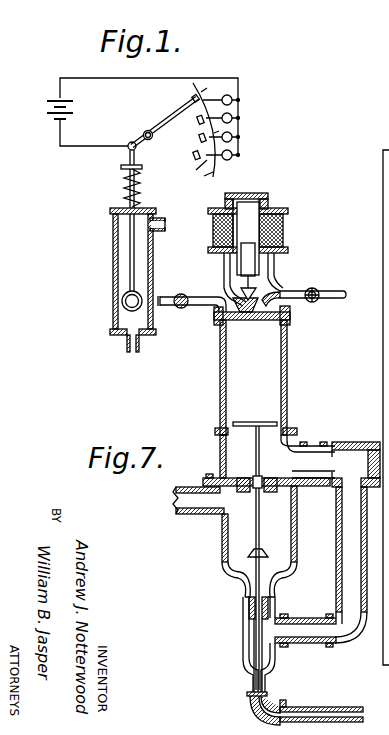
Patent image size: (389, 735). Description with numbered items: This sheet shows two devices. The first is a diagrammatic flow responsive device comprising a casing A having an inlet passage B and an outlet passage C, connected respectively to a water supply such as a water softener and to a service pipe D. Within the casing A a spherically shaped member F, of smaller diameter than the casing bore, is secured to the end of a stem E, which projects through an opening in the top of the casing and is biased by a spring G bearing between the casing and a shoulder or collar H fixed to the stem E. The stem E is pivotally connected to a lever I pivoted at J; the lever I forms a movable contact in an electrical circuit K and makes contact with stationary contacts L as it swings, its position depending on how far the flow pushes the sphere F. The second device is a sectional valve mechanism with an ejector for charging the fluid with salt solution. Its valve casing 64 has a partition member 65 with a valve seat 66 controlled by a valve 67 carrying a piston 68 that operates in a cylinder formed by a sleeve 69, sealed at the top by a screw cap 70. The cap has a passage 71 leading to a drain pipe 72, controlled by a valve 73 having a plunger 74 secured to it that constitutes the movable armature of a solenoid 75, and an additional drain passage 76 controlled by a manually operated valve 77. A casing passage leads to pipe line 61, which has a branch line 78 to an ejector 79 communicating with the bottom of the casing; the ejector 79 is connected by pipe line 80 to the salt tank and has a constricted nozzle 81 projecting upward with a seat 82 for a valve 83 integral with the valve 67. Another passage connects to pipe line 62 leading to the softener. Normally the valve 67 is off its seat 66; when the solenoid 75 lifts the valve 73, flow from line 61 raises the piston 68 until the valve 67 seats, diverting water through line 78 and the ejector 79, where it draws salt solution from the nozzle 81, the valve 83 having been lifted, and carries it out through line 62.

In FIG. 1, the casing A is at (152, 263).
In FIG. 1, the inlet passage B is at (164, 226).
In FIG. 1, the outlet passage C is at (148, 329).
In FIG. 1, the service pipe D is at (133, 352).
In FIG. 1, the stem E is at (128, 282).
In FIG. 1, the spherically shaped member F is at (122, 306).
In FIG. 1, the spring G is at (140, 187).
In FIG. 1, the shoulder or collar H is at (121, 167).
In FIG. 1, the lever I is at (163, 124).
In FIG. 1, the pivot J is at (146, 131).
In FIG. 1, the electrical circuit K is at (193, 82).
In FIG. 1, the stationary contacts L is at (194, 158).
In FIG. 7, the pipe line 61 is at (368, 466).
In FIG. 7, the pipe line 62 is at (172, 497).
In FIG. 7, the valve casing 64 is at (297, 508).
In FIG. 7, the partition member 65 is at (232, 478).
In FIG. 7, the valve seat 66 is at (268, 492).
In FIG. 7, the valve 67 is at (268, 553).
In FIG. 7, the piston 68 is at (278, 421).
In FIG. 7, the sleeve 69 is at (221, 382).
In FIG. 7, the screw cap 70 is at (291, 318).
In FIG. 7, the passage 71 is at (252, 318).
In FIG. 7, the drain pipe 72 is at (298, 294).
In FIG. 7, the valve 73 is at (284, 292).
In FIG. 7, the solenoid plunger 74 is at (246, 272).
In FIG. 7, the solenoid 75 is at (286, 226).
In FIG. 7, the additional drain passage 76 is at (206, 310).
In FIG. 7, the manually operated valve 77 is at (186, 295).
In FIG. 7, the branch line 78 is at (341, 549).
In FIG. 7, the ejector 79 is at (244, 649).
In FIG. 7, the pipe line 80 is at (320, 712).
In FIG. 7, the constricted nozzle 81 is at (254, 627).
In FIG. 7, the seat 82 is at (263, 607).
In FIG. 7, the valve 83 is at (246, 596).